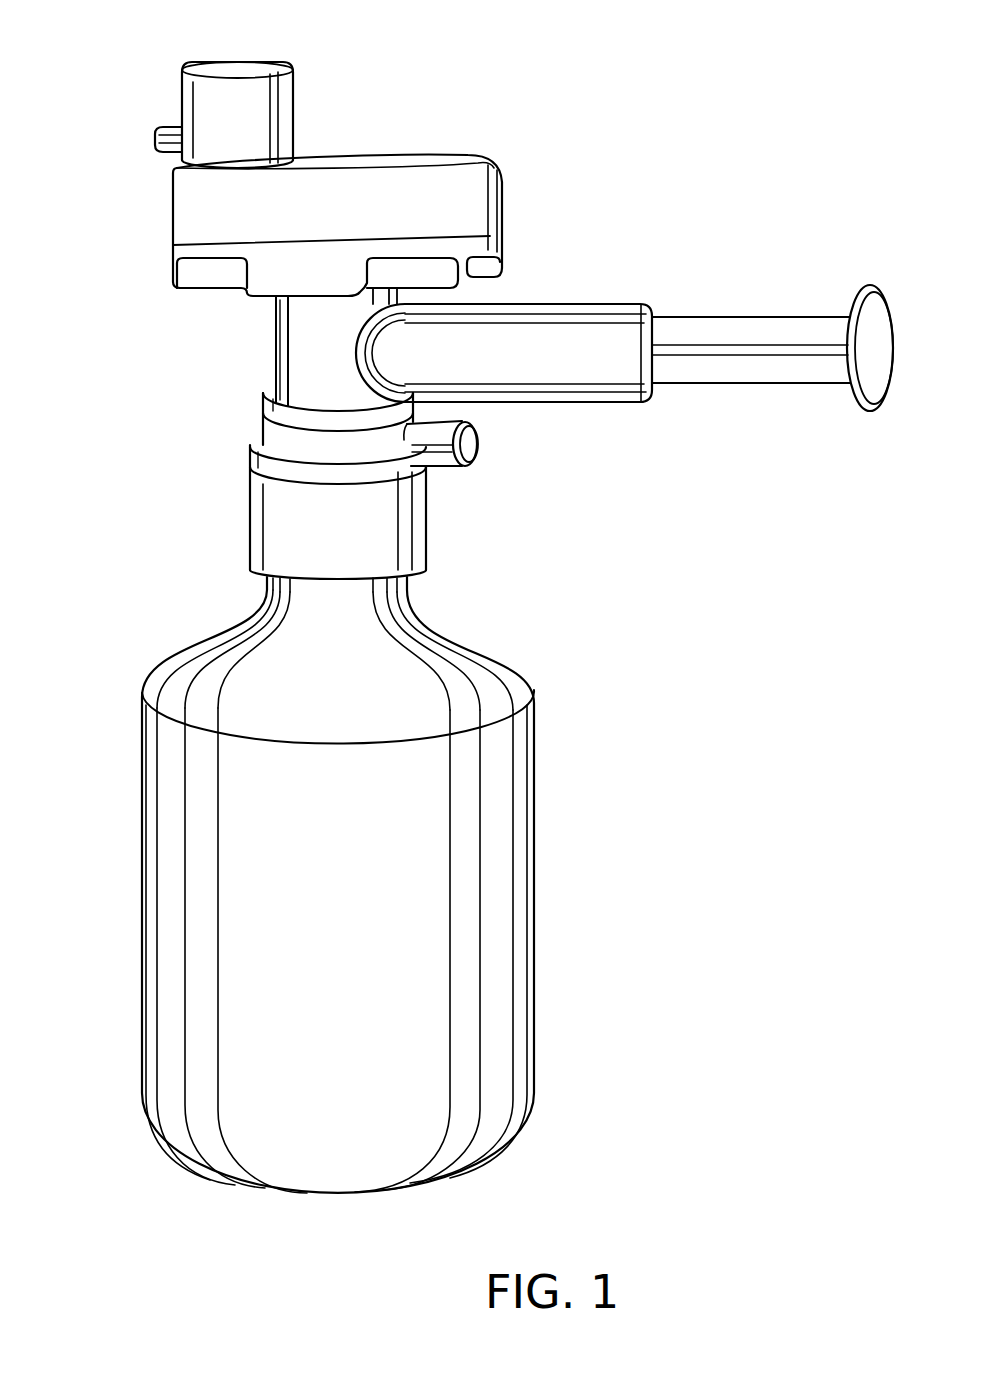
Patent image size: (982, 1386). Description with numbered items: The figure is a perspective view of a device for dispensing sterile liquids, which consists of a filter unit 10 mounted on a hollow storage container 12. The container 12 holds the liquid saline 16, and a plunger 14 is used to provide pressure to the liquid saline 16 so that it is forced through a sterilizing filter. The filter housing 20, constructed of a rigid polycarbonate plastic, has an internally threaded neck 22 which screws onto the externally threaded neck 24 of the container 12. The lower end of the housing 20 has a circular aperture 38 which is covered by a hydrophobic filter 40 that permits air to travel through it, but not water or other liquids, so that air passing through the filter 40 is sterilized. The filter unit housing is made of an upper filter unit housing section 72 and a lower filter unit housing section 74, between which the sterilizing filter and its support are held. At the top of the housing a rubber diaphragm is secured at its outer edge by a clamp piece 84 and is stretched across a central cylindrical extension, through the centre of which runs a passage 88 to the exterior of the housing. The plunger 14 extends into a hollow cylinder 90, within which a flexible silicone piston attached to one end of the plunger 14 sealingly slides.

The filter unit 10 is at (606, 227).
The hollow storage container 12 is at (514, 661).
The plunger 14 is at (774, 401).
The liquid saline 16 is at (515, 872).
The filter housing 20 is at (150, 218).
The internally threaded neck 22 is at (263, 505).
The externally threaded neck 24 is at (370, 593).
The circular aperture 38 is at (440, 463).
The hydrophobic filter 40 is at (476, 443).
The upper filter unit housing section 72 is at (428, 162).
The lower filter unit housing section 74 is at (205, 273).
The clamp piece 84 is at (241, 61).
The passage 88 is at (155, 137).
The hollow cylinder 90 is at (547, 302).